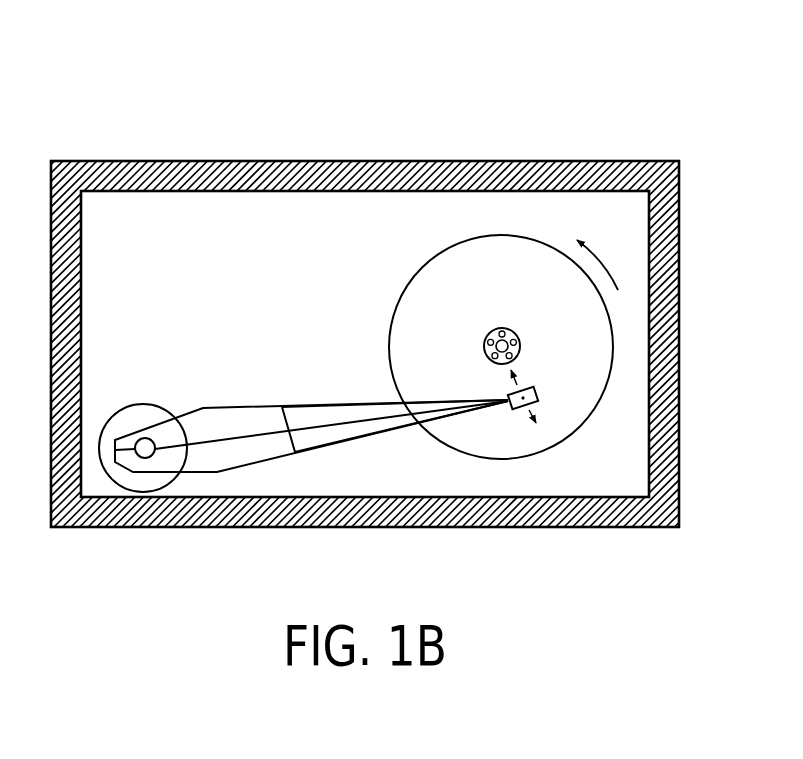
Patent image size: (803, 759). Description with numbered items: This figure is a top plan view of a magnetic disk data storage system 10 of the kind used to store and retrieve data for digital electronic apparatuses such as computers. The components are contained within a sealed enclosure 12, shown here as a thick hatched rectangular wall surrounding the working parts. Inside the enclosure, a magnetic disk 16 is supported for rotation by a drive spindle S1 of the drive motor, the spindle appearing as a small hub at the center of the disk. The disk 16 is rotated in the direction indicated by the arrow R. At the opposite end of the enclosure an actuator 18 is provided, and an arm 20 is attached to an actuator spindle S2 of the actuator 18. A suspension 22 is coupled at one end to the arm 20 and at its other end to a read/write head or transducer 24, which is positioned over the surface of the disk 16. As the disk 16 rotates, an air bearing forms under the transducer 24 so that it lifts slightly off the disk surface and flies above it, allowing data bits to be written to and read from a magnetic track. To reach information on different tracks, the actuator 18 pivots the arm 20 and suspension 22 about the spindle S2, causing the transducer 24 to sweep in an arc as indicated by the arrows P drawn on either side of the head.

The magnetic disk data storage system 10 is at (549, 136).
The sealed enclosure 12 is at (300, 527).
The magnetic disk 16 is at (443, 272).
The actuator 18 is at (138, 412).
The arm 20 is at (237, 415).
The suspension 22 is at (352, 428).
The read/write head 24 is at (535, 390).
The drive spindle S1 is at (509, 331).
The actuator spindle S2 is at (156, 452).
The arrows indicating pivot direction P is at (535, 390).
The arrow indicating rotation direction R is at (602, 259).